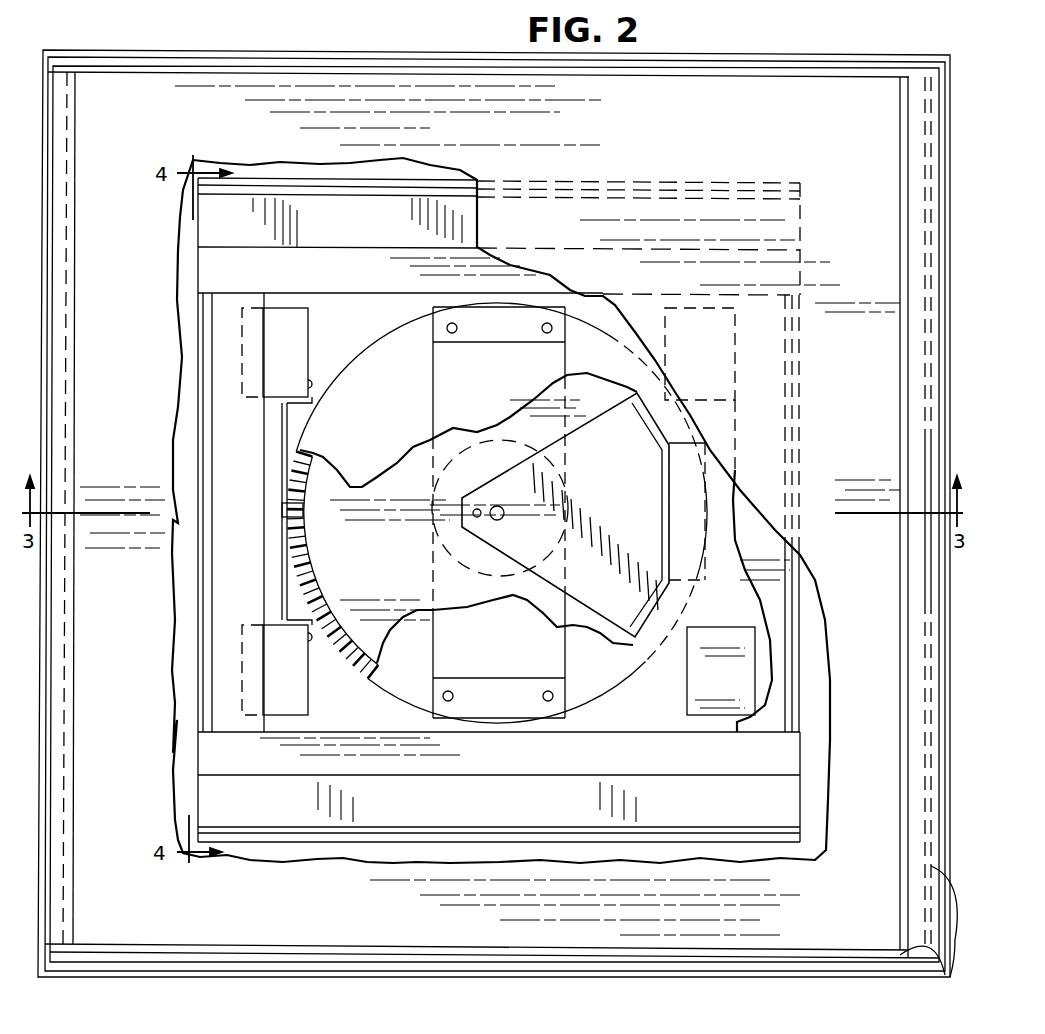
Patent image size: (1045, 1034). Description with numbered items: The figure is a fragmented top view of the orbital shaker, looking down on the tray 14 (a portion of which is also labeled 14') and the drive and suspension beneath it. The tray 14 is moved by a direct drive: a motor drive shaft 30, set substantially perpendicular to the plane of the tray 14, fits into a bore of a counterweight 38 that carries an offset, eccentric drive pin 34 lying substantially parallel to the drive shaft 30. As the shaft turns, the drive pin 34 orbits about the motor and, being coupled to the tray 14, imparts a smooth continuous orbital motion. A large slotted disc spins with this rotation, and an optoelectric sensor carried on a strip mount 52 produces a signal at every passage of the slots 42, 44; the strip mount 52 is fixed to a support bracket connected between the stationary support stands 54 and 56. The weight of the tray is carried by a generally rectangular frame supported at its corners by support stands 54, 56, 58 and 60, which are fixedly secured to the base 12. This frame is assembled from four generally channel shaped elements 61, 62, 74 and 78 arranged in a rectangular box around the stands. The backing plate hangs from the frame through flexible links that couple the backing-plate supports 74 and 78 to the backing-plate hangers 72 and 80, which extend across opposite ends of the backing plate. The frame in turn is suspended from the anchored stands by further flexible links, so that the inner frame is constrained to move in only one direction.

The base 12 is at (950, 70).
The tray 14 is at (881, 977).
The frame side wall 14' is at (925, 936).
The drive shaft 30 is at (505, 508).
The drive pin 34 is at (477, 518).
The counterweight 38 is at (600, 626).
The slot 42 is at (341, 650).
The slot 44 is at (354, 670).
The strip mount 52 is at (281, 510).
The support stand 54 is at (309, 708).
The support stand 56 is at (310, 347).
The support stand 58 is at (735, 410).
The support stand 60 is at (732, 627).
The channel shaped element 61 is at (213, 557).
The channel shaped element 62 is at (773, 620).
The backing-plate hanger 72 is at (365, 236).
The channel shaped element 74 is at (392, 284).
The channel shaped element 78 is at (402, 710).
The backing-plate hanger 80 is at (668, 818).